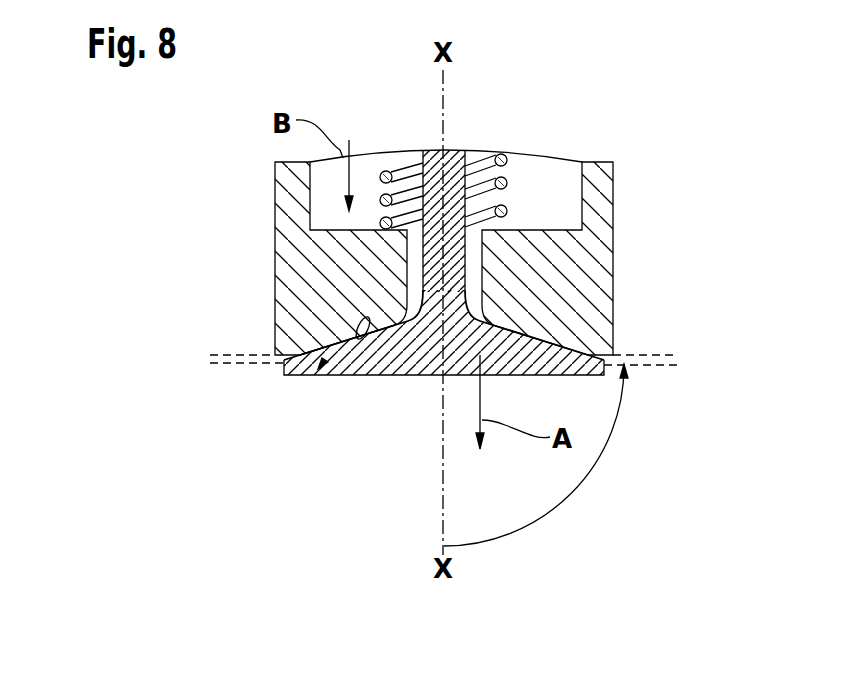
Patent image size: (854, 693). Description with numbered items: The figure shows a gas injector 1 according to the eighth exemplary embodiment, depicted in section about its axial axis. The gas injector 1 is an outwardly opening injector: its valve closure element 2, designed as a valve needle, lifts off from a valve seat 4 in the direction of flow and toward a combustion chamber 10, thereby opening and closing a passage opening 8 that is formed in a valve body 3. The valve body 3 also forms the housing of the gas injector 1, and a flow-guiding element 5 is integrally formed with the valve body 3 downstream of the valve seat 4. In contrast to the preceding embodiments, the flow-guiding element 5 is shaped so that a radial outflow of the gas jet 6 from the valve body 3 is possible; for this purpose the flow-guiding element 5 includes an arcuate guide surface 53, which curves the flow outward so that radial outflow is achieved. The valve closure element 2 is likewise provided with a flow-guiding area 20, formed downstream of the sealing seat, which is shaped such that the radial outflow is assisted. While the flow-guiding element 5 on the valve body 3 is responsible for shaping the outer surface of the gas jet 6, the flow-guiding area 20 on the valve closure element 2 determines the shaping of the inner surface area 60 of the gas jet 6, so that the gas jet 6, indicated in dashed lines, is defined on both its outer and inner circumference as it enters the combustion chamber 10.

The gas injector 1 is at (252, 150).
The valve closure element 2 is at (457, 150).
The valve body 3 is at (293, 217).
The valve seat 4 is at (537, 350).
The flow-guiding element 5 is at (323, 364).
The gas jet 6 is at (242, 352).
The passage opening 8 is at (470, 275).
The combustion chamber 10 is at (381, 530).
The flow-guiding area 20 is at (349, 340).
The arcuate guide surface 53 is at (379, 322).
The inner surface area 60 is at (242, 352).